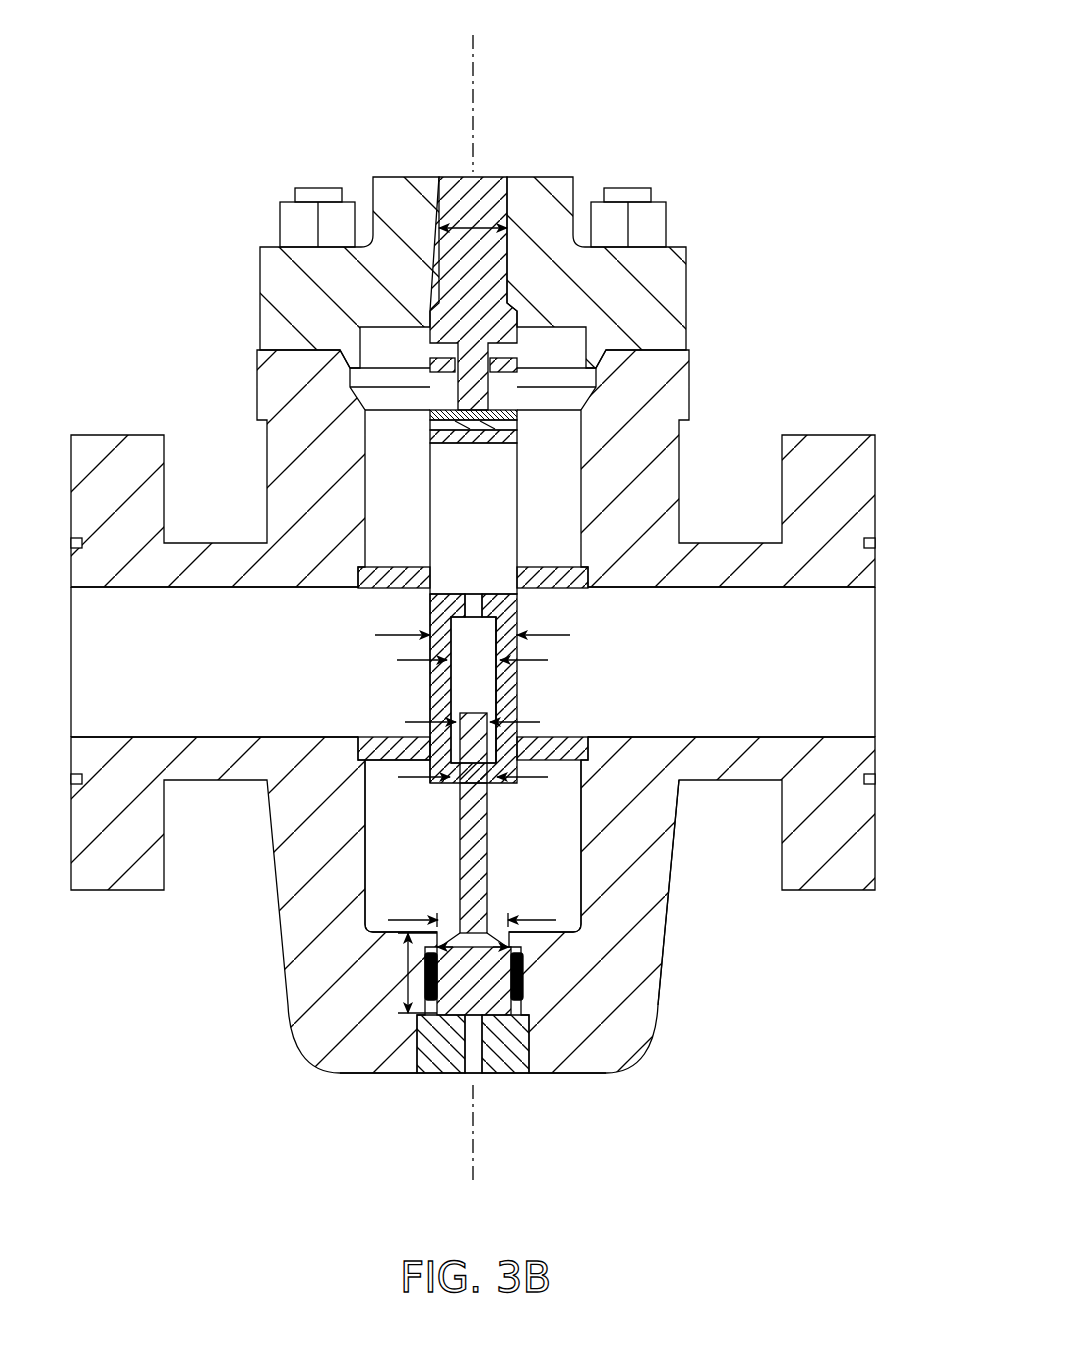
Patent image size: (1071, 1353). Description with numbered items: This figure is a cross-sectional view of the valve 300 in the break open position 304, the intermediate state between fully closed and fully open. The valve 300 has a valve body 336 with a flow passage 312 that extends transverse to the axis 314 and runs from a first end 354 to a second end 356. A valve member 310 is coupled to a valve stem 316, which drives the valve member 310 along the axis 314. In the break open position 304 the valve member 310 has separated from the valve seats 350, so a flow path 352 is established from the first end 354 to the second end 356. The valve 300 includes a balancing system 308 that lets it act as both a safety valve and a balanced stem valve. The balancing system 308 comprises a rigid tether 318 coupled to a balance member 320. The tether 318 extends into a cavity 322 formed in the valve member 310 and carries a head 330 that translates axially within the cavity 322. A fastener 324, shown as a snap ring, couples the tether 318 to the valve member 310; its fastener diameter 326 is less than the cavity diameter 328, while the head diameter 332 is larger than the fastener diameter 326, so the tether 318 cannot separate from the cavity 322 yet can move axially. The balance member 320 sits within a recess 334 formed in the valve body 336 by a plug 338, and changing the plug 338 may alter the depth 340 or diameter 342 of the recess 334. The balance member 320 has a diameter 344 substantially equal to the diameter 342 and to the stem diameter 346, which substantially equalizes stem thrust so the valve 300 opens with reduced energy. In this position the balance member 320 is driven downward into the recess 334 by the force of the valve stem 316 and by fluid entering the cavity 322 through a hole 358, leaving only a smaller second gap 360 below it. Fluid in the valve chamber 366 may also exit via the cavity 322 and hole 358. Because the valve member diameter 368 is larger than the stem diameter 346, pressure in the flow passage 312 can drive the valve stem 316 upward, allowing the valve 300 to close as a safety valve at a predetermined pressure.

The valve 300 is at (685, 40).
The break open position 304 is at (670, 1170).
The balancing system 308 is at (692, 910).
The valve member 310 is at (498, 598).
The flow passage 312 is at (107, 662).
The axis 314 is at (476, 68).
The valve stem 316 is at (492, 195).
The tether 318 is at (488, 842).
The balance member 320 is at (487, 977).
The cavity 322 is at (470, 645).
The fastener 324 is at (487, 782).
The fastener diameter 326 is at (527, 718).
The cavity diameter 328 is at (417, 662).
The head 330 is at (515, 667).
The head diameter 332 is at (435, 775).
The recess 334 is at (450, 913).
The valve body 336 is at (663, 1000).
The plug 338 is at (517, 1057).
The depth 340 is at (408, 962).
The diameter 342 is at (540, 917).
The diameter 344 is at (483, 893).
The stem diameter 346 is at (478, 225).
The valve seats 350 is at (403, 578).
The flow path 352 is at (425, 598).
The first end 354 is at (97, 736).
The second end 356 is at (850, 737).
The hole 358 is at (472, 600).
The second gap 360 is at (447, 1027).
The valve chamber 366 is at (388, 852).
The valve member diameter 368 is at (413, 638).